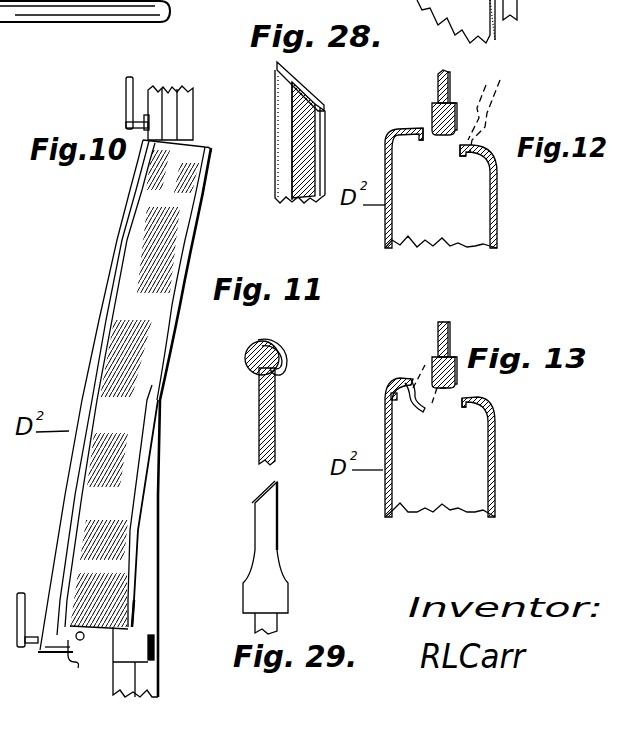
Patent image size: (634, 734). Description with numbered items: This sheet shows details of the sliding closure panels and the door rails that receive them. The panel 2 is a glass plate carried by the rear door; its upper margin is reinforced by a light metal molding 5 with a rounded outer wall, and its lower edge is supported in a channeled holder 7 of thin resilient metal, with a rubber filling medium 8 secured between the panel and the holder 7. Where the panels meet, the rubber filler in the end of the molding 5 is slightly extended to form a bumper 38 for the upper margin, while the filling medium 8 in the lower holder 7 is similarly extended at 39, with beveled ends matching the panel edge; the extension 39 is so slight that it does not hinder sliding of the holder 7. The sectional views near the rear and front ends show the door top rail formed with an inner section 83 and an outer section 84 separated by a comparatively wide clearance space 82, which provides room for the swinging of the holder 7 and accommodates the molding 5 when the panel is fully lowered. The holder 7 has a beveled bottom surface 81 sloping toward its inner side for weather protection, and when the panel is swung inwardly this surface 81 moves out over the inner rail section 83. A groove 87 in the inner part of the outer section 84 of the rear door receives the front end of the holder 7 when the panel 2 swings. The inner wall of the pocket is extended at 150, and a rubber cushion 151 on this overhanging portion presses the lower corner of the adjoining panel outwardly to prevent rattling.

In FIG. 10, the panel 2 is at (127, 253).
In FIG. 28, the panel 2 is at (305, 165).
In FIG. 11, the panel 2 is at (258, 395).
In FIG. 29, the panel 2 is at (277, 623).
In FIG. 12, the panel 2 is at (438, 87).
In FIG. 13, the panel 2 is at (443, 339).
In FIG. 10, the metal molding 5 is at (192, 227).
In FIG. 28, the metal molding 5 is at (325, 142).
In FIG. 11, the metal molding 5 is at (288, 350).
In FIG. 10, the channeled holder 7 is at (113, 299).
In FIG. 29, the channeled holder 7 is at (263, 538).
In FIG. 12, the channeled holder 7 is at (432, 113).
In FIG. 13, the channeled holder 7 is at (437, 357).
In FIG. 12, the filling medium 8 is at (452, 100).
In FIG. 13, the filling medium 8 is at (452, 360).
In FIG. 10, the bumper 38 is at (211, 148).
In FIG. 28, the bumper 38 is at (310, 98).
In FIG. 10, the extension of the lower filler 39 is at (146, 137).
In FIG. 29, the extension of the lower filler 39 is at (272, 486).
In FIG. 12, the beveled surface 81 is at (440, 133).
In FIG. 13, the beveled surface 81 is at (443, 397).
In FIG. 12, the clearance space 82 is at (458, 152).
In FIG. 13, the clearance space 82 is at (450, 403).
In FIG. 10, the inner section of the top rail 83 is at (86, 655).
In FIG. 12, the inner section of the top rail 83 is at (497, 148).
In FIG. 13, the inner section of the top rail 83 is at (477, 396).
In FIG. 10, the outer section of the top rail 84 is at (67, 493).
In FIG. 12, the outer section of the top rail 84 is at (407, 130).
In FIG. 13, the outer section of the top rail 84 is at (405, 380).
In FIG. 13, the groove 87 is at (418, 373).
In FIG. 10, the extension of the pocket inner wall 150 is at (158, 640).
In FIG. 10, the rubber cushion 151 is at (143, 627).